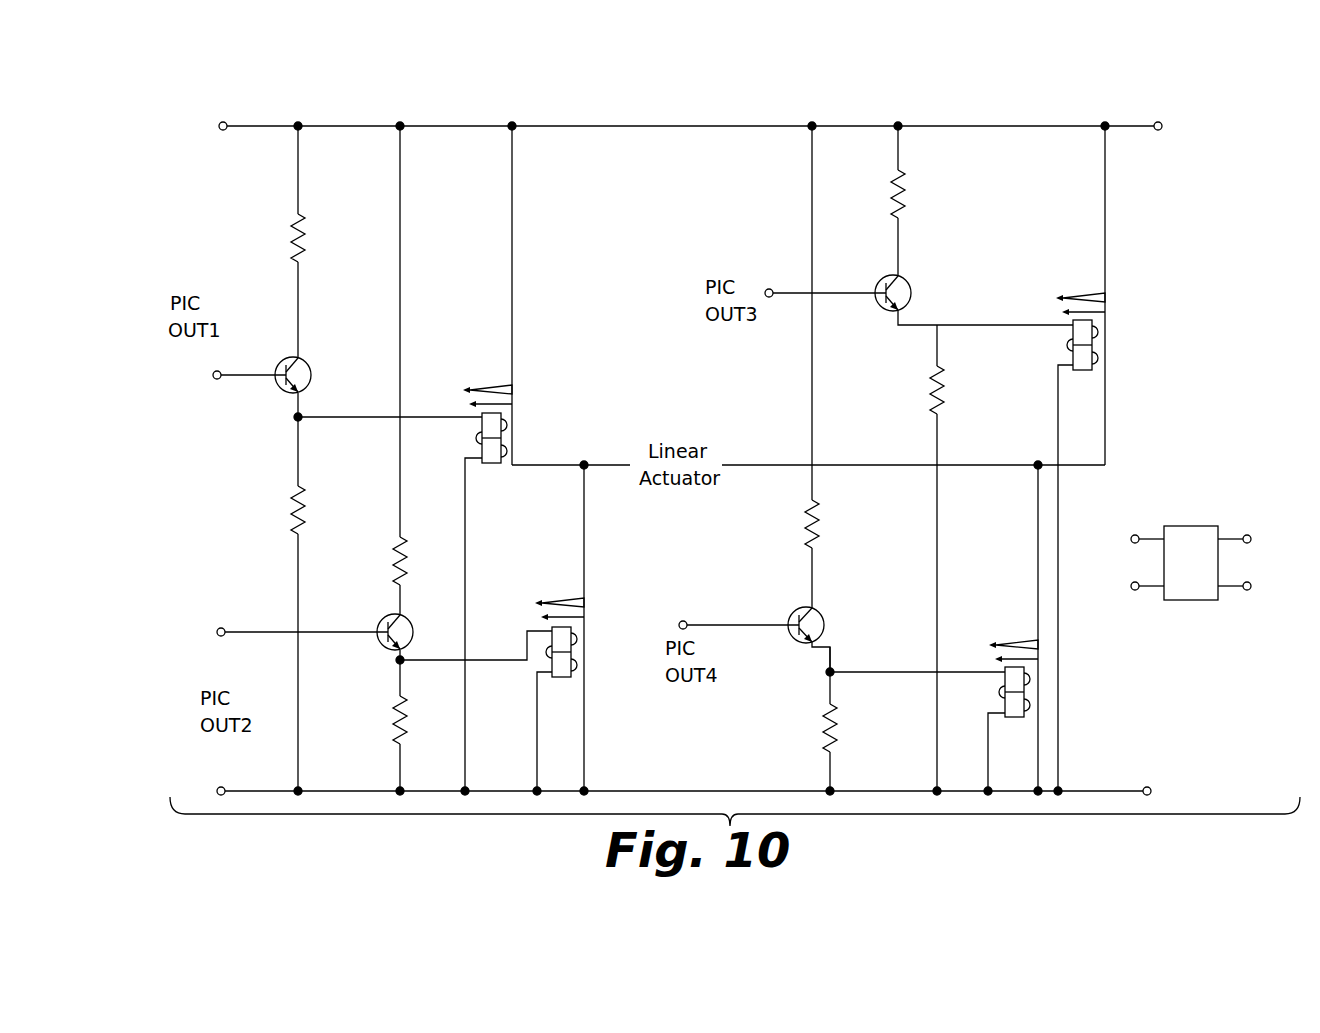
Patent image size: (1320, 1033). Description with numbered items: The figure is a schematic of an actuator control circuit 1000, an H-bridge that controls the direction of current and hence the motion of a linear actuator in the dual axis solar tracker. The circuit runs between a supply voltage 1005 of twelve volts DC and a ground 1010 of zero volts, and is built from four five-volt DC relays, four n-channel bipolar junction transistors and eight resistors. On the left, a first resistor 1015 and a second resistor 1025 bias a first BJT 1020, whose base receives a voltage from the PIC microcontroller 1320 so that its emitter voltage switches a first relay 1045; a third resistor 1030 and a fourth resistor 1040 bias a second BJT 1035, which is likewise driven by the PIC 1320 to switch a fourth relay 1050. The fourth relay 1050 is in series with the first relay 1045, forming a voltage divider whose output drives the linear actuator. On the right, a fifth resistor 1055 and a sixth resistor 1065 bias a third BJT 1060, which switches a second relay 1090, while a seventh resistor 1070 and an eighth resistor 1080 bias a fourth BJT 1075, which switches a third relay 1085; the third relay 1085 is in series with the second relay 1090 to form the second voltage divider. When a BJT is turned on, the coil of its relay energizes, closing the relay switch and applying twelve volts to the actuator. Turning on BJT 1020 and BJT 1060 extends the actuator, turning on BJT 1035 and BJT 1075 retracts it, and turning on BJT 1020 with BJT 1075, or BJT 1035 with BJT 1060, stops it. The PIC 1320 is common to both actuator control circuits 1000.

The actuator control circuit 1000 is at (258, 65).
The supply voltage 1005 is at (548, 125).
The ground 1010 is at (613, 790).
The resistor R1 1015 is at (303, 222).
The BJT 1020 is at (282, 392).
The resistor R9 1025 is at (305, 495).
The resistor R3 1030 is at (406, 540).
The BJT 1035 is at (380, 626).
The resistor R10 1040 is at (432, 700).
The relay RLY1 1045 is at (505, 438).
The relay RLY4 1050 is at (575, 650).
The resistor R4 1055 is at (805, 512).
The BJT 1060 is at (790, 614).
The resistor R12 1065 is at (838, 720).
The resistor R2 1070 is at (890, 200).
The BJT 1075 is at (878, 305).
The resistor R11 1080 is at (945, 390).
The relay RLY3 1085 is at (1097, 370).
The relay RLY2 1090 is at (1028, 690).
The PIC microcontroller 1320 is at (1185, 525).